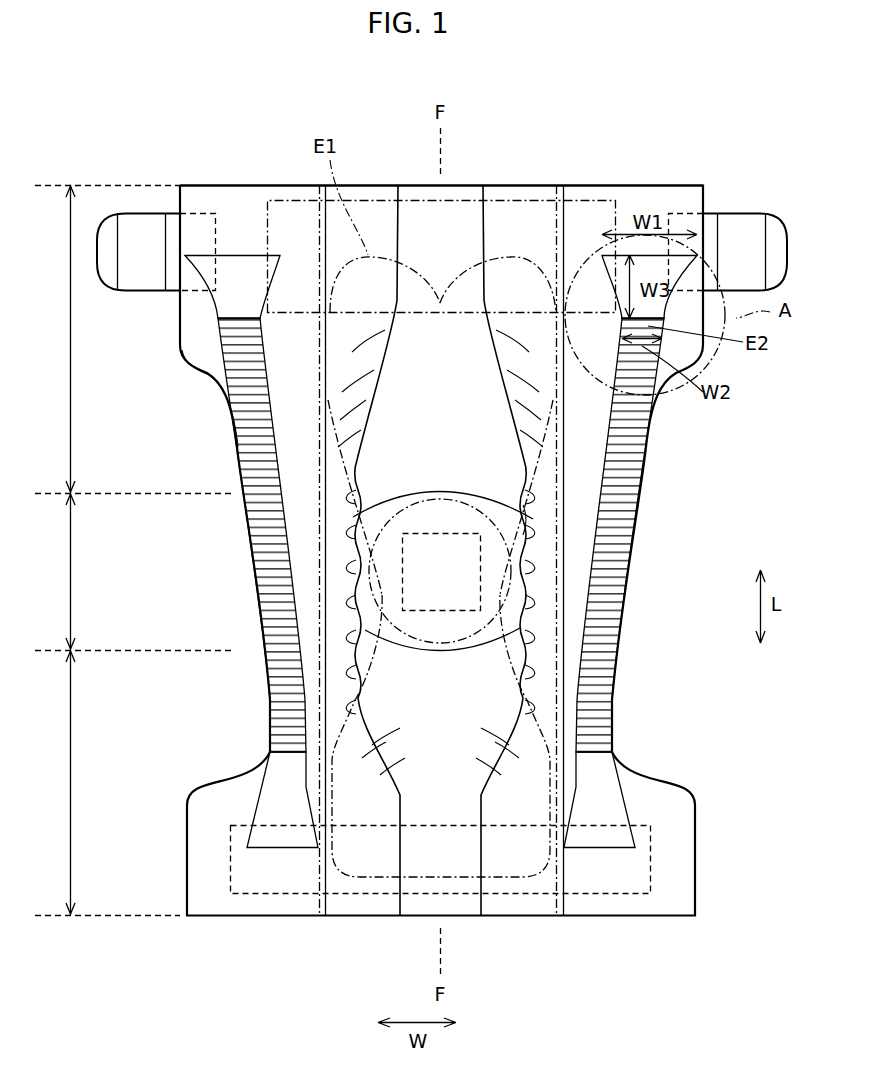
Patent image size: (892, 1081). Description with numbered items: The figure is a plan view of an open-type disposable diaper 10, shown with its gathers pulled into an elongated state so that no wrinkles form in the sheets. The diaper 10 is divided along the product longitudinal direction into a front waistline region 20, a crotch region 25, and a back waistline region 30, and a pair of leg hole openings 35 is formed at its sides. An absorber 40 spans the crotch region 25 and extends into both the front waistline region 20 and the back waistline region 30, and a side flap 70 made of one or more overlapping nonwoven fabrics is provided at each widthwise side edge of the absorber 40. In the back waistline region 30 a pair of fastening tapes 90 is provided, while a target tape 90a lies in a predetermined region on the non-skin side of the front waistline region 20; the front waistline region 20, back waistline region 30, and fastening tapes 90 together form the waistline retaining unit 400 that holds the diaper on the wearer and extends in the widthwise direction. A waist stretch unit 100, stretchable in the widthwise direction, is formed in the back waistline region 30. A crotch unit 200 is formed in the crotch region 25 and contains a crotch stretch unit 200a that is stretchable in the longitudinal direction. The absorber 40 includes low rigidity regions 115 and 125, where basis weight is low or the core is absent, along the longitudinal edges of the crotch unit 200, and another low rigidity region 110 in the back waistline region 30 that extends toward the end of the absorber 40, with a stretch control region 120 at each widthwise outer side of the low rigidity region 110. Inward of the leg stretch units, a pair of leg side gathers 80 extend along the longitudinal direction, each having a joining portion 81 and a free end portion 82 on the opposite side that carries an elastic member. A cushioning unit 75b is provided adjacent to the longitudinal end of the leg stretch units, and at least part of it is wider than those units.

The disposable diaper 10 is at (705, 127).
The front waistline region 20 is at (135, 783).
The crotch region 25 is at (135, 571).
The back waistline region 30 is at (107, 339).
The leg hole openings 35 is at (207, 446).
The absorber 40 is at (487, 447).
The side flap 70 is at (662, 198).
The cushioning unit 75b is at (224, 282).
The leg side gathers 80 is at (543, 530).
The joining portion 81 is at (565, 900).
The free end portion 82 is at (480, 905).
The fastening tapes 90 is at (748, 232).
The target tape 90a is at (283, 882).
The waist stretch unit 100 is at (503, 218).
The low rigidity region 110 is at (440, 285).
The low rigidity region 115 is at (492, 632).
The stretch control region 120 is at (520, 277).
The low rigidity region 125 is at (548, 492).
The crotch unit 200 is at (376, 573).
The crotch stretch unit 200a is at (455, 590).
The waistline retaining unit 400 is at (718, 349).